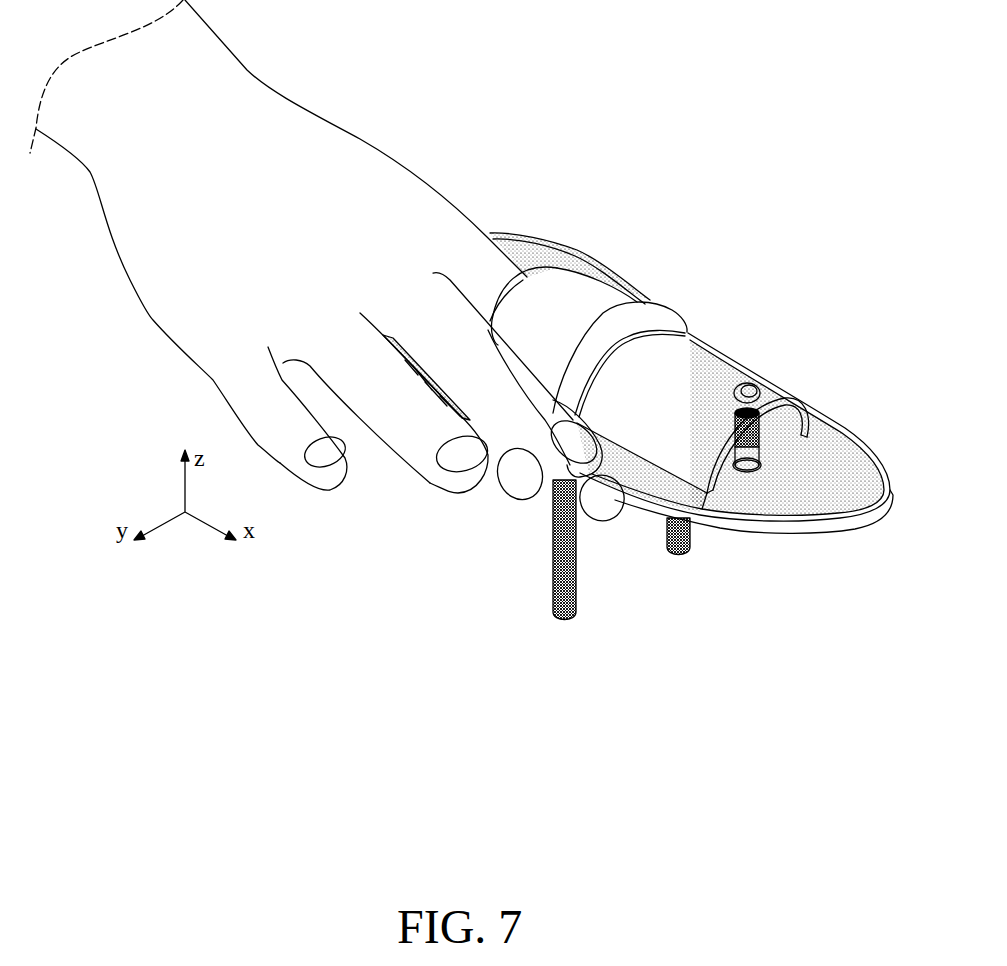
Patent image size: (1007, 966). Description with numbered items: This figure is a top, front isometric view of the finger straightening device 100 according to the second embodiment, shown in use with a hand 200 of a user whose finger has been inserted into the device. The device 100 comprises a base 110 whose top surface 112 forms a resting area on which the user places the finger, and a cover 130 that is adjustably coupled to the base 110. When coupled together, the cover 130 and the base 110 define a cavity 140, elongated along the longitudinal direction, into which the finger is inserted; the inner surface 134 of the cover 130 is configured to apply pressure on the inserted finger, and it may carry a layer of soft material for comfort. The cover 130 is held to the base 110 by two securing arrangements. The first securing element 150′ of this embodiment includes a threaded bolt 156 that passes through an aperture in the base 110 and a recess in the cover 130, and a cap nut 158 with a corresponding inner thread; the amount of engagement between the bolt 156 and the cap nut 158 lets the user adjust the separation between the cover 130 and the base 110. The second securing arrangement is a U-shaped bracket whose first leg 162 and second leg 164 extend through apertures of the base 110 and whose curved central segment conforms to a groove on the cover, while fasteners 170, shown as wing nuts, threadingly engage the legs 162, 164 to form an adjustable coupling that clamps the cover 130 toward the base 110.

The hand of user 200 is at (392, 112).
The finger straightening device 100 is at (682, 424).
The base 110 is at (648, 503).
The top surface 112 is at (740, 497).
The cover 130 is at (567, 293).
The inner surface 134 is at (805, 427).
The cavity 140 is at (767, 433).
The first securing element 150′ is at (728, 376).
The threaded bolt 156 is at (748, 385).
The cap nut 158 is at (757, 470).
The first leg 162 is at (553, 583).
The second leg 164 is at (674, 557).
The fasteners 170 is at (510, 482).